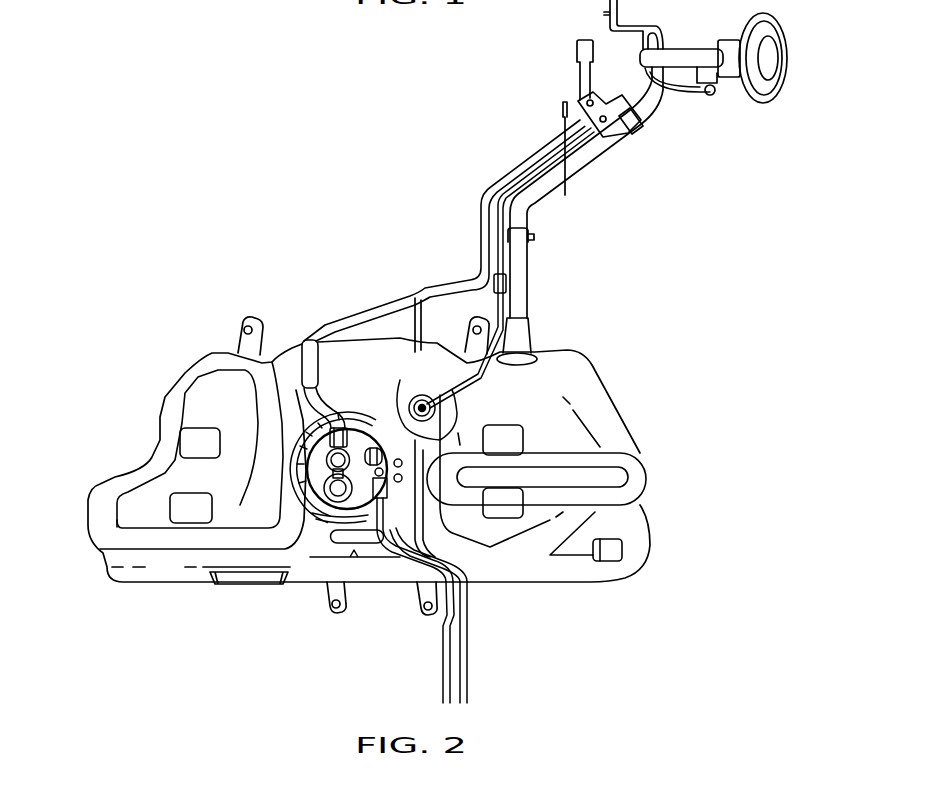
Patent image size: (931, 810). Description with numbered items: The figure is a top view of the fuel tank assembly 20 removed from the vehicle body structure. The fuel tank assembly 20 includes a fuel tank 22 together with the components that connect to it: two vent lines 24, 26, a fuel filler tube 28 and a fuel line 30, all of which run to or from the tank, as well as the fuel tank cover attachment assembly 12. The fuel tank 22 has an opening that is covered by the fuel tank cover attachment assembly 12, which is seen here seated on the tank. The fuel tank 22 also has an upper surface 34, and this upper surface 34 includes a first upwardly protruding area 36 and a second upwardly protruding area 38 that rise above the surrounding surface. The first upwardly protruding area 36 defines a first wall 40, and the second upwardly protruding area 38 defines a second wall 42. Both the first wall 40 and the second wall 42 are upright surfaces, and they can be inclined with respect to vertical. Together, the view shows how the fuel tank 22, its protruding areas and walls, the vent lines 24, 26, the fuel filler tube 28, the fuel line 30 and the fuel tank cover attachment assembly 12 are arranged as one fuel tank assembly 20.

The fuel tank assembly 20 is at (148, 300).
The fuel tank 22 is at (595, 372).
The vent line 24 is at (362, 312).
The vent line 26 is at (470, 665).
The fuel filler tube 28 is at (583, 152).
The fuel line 30 is at (384, 540).
The upper surface 34 is at (560, 432).
The first upwardly protruding area 36 is at (270, 477).
The second upwardly protruding area 38 is at (507, 503).
The first wall 40 is at (310, 533).
The second wall 42 is at (421, 440).
The fuel tank cover attachment assembly 12 is at (290, 450).